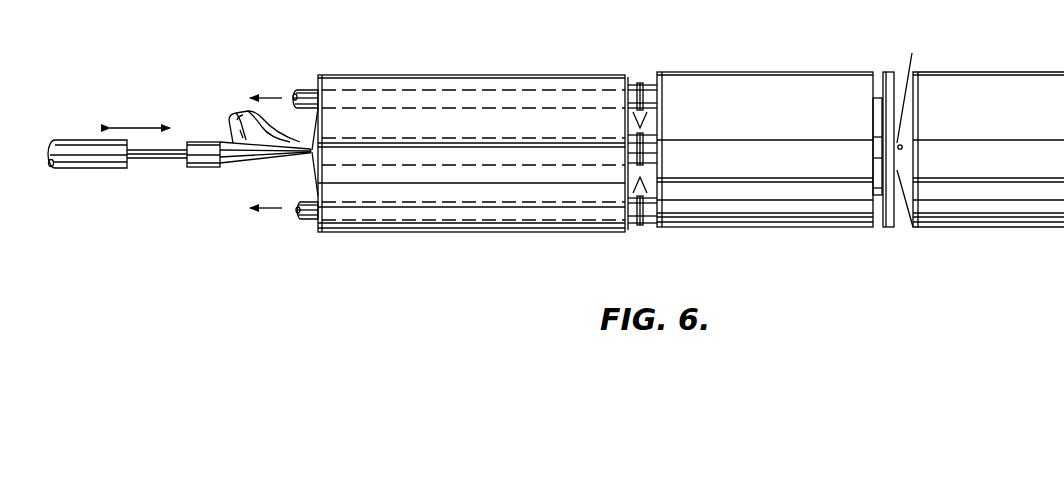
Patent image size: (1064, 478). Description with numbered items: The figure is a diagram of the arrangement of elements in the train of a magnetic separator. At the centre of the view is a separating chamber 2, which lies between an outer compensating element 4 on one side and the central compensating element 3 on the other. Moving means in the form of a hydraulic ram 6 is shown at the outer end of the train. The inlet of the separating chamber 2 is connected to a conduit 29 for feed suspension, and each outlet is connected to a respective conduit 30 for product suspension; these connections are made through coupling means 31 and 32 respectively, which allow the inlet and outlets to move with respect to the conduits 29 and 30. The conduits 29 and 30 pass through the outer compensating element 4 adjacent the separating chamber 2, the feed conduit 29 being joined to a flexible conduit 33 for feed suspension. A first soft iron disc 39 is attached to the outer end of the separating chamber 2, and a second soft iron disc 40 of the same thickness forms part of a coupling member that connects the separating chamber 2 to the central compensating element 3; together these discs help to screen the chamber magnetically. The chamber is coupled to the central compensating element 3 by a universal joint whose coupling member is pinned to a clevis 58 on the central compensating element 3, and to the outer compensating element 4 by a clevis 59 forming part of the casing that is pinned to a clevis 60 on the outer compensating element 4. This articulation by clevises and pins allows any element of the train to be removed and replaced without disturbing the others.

The hydraulic ram 6 is at (79, 143).
The flexible conduit for feed suspension 33 is at (236, 110).
The conduits for product suspension 30 is at (284, 157).
The outer compensating element 4 is at (478, 134).
The conduit for feed suspension 29 is at (459, 163).
The coupling means 32 is at (636, 84).
The clevis 59 is at (650, 118).
The first soft iron disc 39 is at (659, 76).
The clevis 60 is at (632, 181).
The coupling means 31 is at (645, 167).
The separating chamber 2 is at (767, 134).
The second soft iron disc 40 is at (885, 72).
The clevis 58 is at (903, 115).
The central compensating element 3 is at (1018, 134).